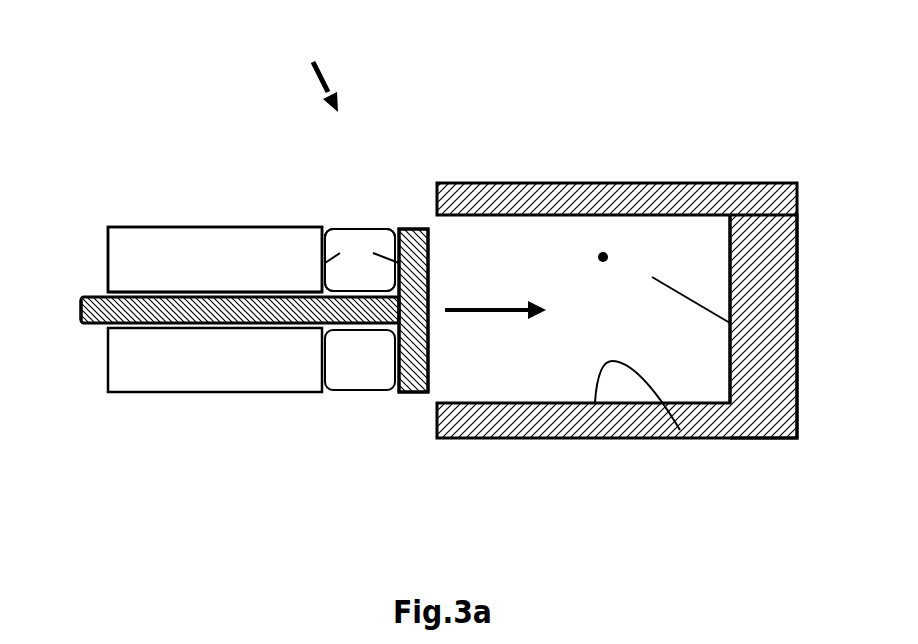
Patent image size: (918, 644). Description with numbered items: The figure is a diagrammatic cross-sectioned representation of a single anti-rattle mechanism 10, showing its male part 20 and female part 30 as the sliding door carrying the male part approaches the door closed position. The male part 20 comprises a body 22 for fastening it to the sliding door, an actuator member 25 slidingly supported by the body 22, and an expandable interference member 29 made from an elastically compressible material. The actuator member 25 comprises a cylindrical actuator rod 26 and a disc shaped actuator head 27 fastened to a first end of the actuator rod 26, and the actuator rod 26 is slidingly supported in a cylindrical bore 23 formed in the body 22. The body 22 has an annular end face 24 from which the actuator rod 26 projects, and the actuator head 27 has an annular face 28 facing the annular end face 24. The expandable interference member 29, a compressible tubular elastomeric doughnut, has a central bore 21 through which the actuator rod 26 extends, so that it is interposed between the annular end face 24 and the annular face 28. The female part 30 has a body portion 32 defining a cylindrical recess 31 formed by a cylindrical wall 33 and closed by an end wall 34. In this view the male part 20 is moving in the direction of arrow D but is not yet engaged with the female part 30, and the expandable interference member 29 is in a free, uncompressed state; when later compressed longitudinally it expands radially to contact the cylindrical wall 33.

The anti-rattle mechanism 10 is at (310, 71).
The male part 20 is at (118, 224).
The central bore 21 is at (363, 328).
The body 22 is at (187, 227).
The cylindrical bore 23 is at (225, 292).
The annular end face 24 is at (336, 250).
The actuator member 25 is at (169, 332).
The actuator rod 26 is at (83, 394).
The actuator head 27 is at (390, 358).
The annular face 28 is at (377, 250).
The expandable interference member 29 is at (362, 229).
The female part 30 is at (533, 180).
The cylindrical recess 31 is at (602, 252).
The body portion 32 is at (743, 183).
The cylindrical wall 33 is at (680, 430).
The end wall 34 is at (652, 277).
The arrow D is at (490, 314).